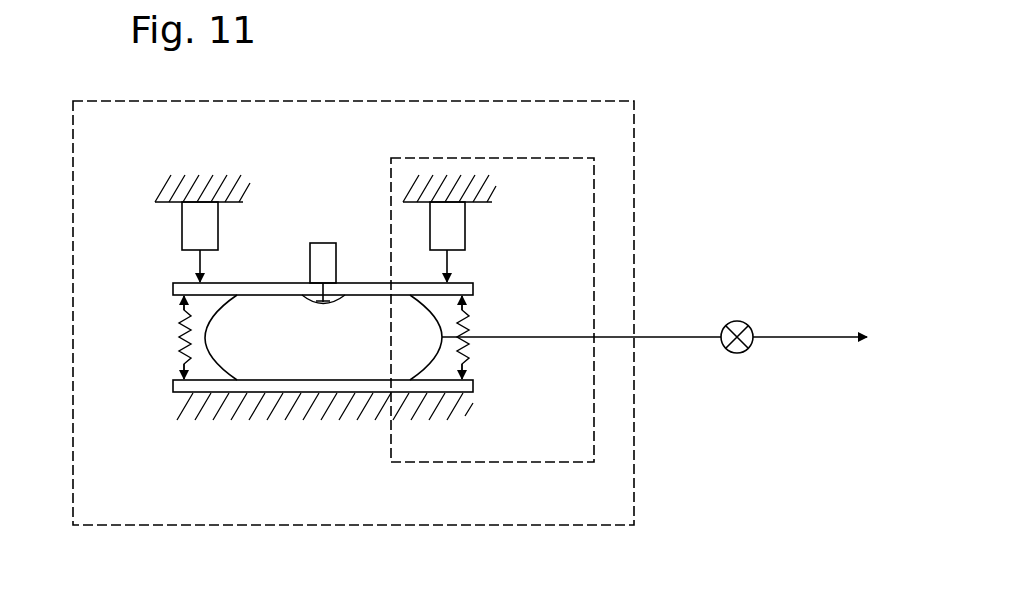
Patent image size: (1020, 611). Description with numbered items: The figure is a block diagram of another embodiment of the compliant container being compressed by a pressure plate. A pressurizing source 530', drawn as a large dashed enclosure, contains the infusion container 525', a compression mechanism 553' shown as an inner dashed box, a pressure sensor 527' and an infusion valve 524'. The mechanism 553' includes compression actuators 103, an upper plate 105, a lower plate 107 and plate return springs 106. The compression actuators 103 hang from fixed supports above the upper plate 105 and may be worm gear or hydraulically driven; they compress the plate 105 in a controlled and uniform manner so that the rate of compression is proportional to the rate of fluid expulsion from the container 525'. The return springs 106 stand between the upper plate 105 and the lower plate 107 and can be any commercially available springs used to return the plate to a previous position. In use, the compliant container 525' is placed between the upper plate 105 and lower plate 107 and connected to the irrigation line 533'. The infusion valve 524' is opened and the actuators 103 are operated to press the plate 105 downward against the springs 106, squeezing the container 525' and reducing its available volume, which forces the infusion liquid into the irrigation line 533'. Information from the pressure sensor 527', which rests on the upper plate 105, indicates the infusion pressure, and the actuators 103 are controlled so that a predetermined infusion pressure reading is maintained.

The pressurizing source 530' is at (353, 274).
The mechanism 553' is at (428, 325).
The pressure sensor 527' is at (295, 221).
The compression actuators 103 is at (466, 225).
The upper plate 105 is at (473, 286).
The infusion container 525' is at (323, 337).
The plate return springs 106 is at (466, 352).
The lower plate 107 is at (473, 386).
The irrigation line 533' is at (654, 293).
The infusion valve 524' is at (781, 359).